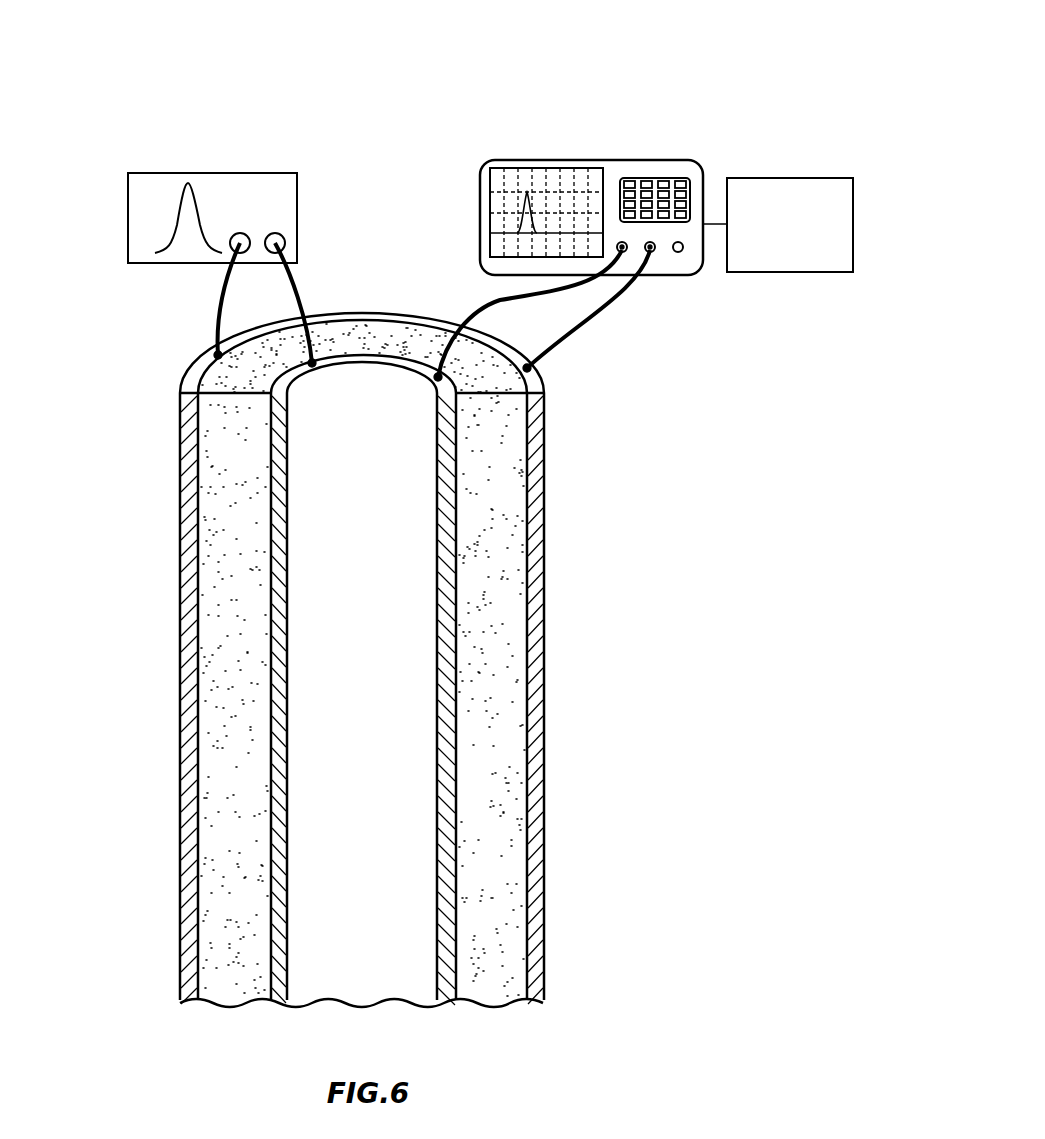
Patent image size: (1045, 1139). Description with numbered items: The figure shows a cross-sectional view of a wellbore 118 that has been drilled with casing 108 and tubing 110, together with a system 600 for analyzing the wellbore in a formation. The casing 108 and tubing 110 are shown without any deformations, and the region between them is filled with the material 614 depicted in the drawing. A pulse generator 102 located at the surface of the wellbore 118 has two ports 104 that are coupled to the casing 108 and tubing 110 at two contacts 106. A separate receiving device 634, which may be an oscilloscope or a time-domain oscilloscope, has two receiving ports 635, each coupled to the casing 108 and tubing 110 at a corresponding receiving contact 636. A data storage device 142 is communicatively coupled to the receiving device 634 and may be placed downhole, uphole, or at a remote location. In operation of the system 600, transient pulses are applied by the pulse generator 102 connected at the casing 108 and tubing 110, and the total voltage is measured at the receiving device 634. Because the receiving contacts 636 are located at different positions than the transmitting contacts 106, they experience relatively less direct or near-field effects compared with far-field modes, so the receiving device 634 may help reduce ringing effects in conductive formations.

The system 600 is at (733, 90).
The pulse generator 102 is at (225, 179).
The ports 104 is at (240, 234).
The contacts 106 is at (310, 362).
The receiving device 634 is at (613, 172).
The receiving ports 635 is at (624, 251).
The receiving contacts 636 is at (442, 376).
The data storage device 142 is at (811, 239).
The casing 108 is at (540, 432).
The tubing 110 is at (450, 733).
The powder fill 614 is at (235, 737).
The wellbore 118 is at (170, 654).